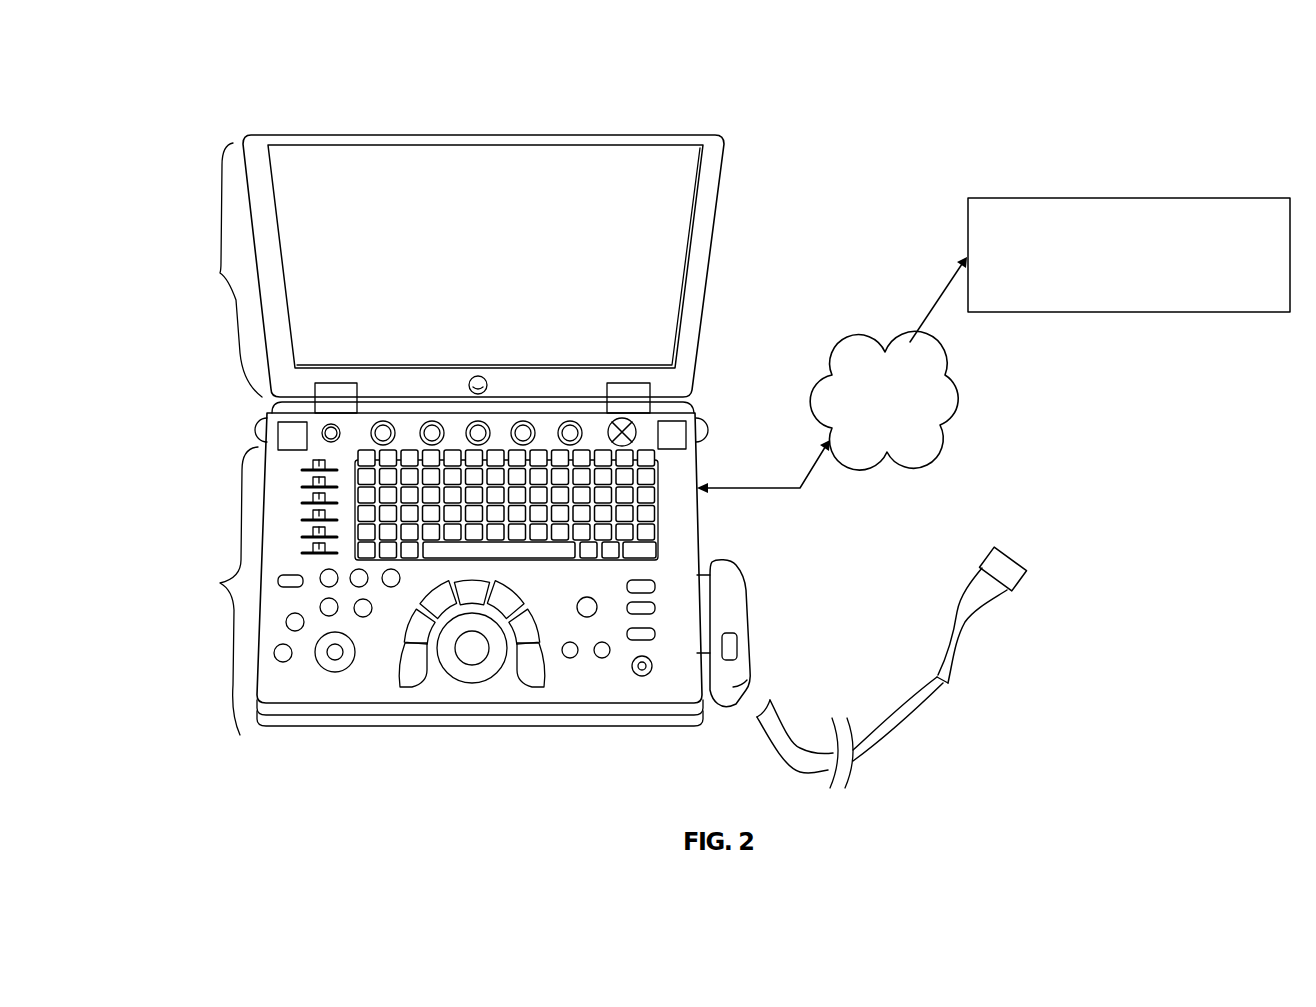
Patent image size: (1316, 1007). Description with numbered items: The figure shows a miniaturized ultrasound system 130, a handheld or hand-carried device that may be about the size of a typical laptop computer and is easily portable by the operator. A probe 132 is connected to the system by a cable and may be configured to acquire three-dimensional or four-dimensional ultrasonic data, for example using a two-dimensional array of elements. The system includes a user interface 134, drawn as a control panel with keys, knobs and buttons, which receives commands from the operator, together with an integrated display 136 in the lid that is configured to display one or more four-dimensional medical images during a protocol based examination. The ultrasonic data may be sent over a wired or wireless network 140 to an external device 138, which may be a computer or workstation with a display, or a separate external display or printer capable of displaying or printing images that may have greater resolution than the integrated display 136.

The miniaturized ultrasound system 130 is at (230, 96).
The probe 132 is at (852, 772).
The user interface 134 is at (220, 583).
The integrated display 136 is at (220, 273).
The external device 138 is at (1027, 198).
The network 140 is at (857, 342).